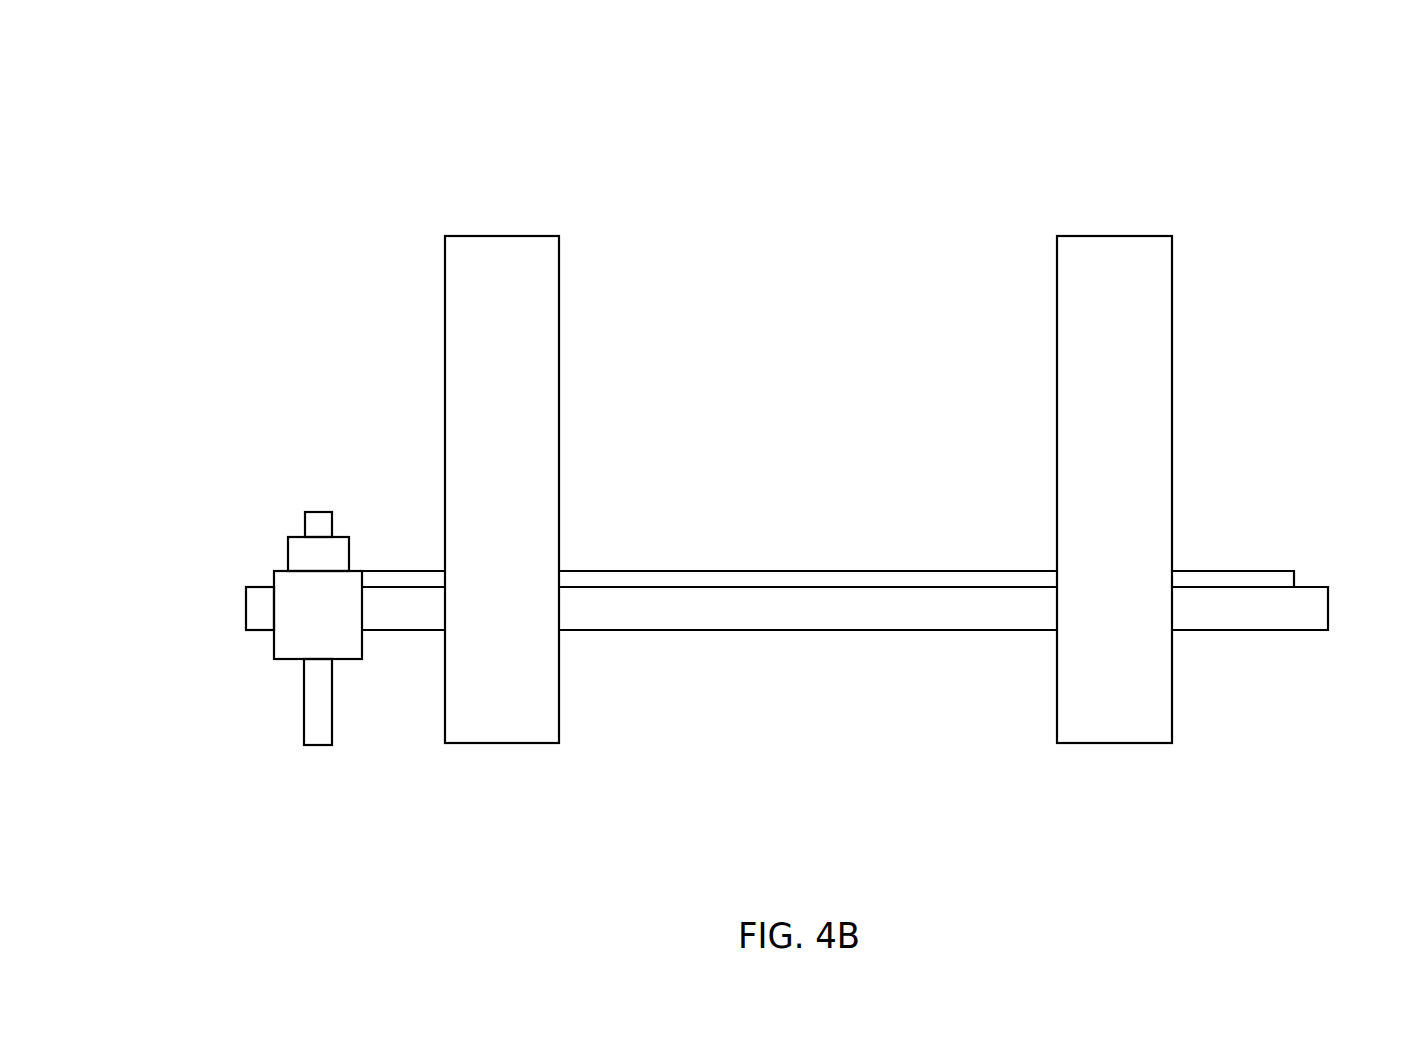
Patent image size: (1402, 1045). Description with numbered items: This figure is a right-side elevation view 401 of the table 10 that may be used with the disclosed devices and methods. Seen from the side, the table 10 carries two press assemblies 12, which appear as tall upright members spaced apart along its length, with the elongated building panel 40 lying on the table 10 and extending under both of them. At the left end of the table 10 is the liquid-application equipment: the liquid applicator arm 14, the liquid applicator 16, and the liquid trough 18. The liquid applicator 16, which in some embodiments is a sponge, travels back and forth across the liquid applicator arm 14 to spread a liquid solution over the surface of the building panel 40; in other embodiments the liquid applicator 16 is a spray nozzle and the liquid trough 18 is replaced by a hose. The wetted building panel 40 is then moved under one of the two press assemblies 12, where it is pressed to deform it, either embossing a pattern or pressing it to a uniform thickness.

The right-side elevation view 401 is at (240, 85).
The press assembly 12 is at (559, 236).
The table 10 is at (1328, 587).
The building panel 40 is at (955, 571).
The liquid applicator arm 14 is at (306, 512).
The liquid applicator 16 is at (288, 557).
The liquid trough 18 is at (274, 659).